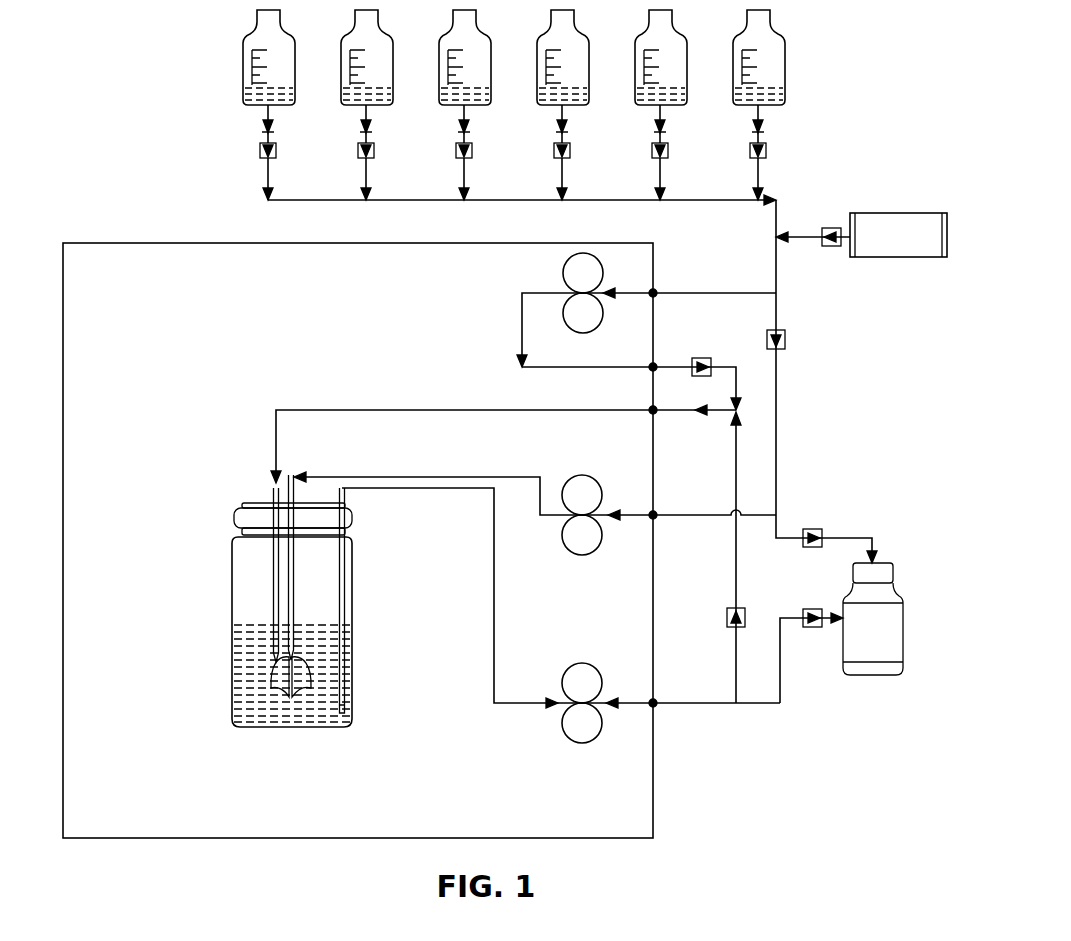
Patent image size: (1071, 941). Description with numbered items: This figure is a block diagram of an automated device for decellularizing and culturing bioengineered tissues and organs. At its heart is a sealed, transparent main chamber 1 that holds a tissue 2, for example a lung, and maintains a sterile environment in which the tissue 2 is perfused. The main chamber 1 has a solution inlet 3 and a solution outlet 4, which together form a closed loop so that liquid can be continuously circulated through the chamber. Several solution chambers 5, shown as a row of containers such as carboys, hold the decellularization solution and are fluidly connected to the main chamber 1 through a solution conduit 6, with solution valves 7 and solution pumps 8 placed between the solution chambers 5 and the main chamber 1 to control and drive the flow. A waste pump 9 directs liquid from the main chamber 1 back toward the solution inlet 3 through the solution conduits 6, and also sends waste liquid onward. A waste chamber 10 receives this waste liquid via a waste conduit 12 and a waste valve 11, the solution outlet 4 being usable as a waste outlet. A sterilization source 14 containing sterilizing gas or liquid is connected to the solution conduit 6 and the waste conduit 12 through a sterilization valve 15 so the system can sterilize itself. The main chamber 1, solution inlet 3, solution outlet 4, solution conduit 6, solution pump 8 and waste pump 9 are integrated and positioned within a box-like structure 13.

The main chamber 1 is at (232, 592).
The tissue 2 is at (298, 696).
The solution inlet 3 is at (276, 437).
The solution outlet 4 is at (368, 490).
The solution chambers 5 is at (243, 65).
The solution conduit 6 is at (266, 175).
The solution valves 7 is at (260, 148).
The solution pumps 8 is at (562, 272).
The waste pump 9 is at (580, 745).
The waste chamber 10 is at (903, 628).
The waste valve 11 is at (810, 609).
The waste conduit 12 is at (773, 707).
The box-like structure 13 is at (63, 250).
The sterilization source 14 is at (890, 213).
The sterilization valve 15 is at (830, 228).